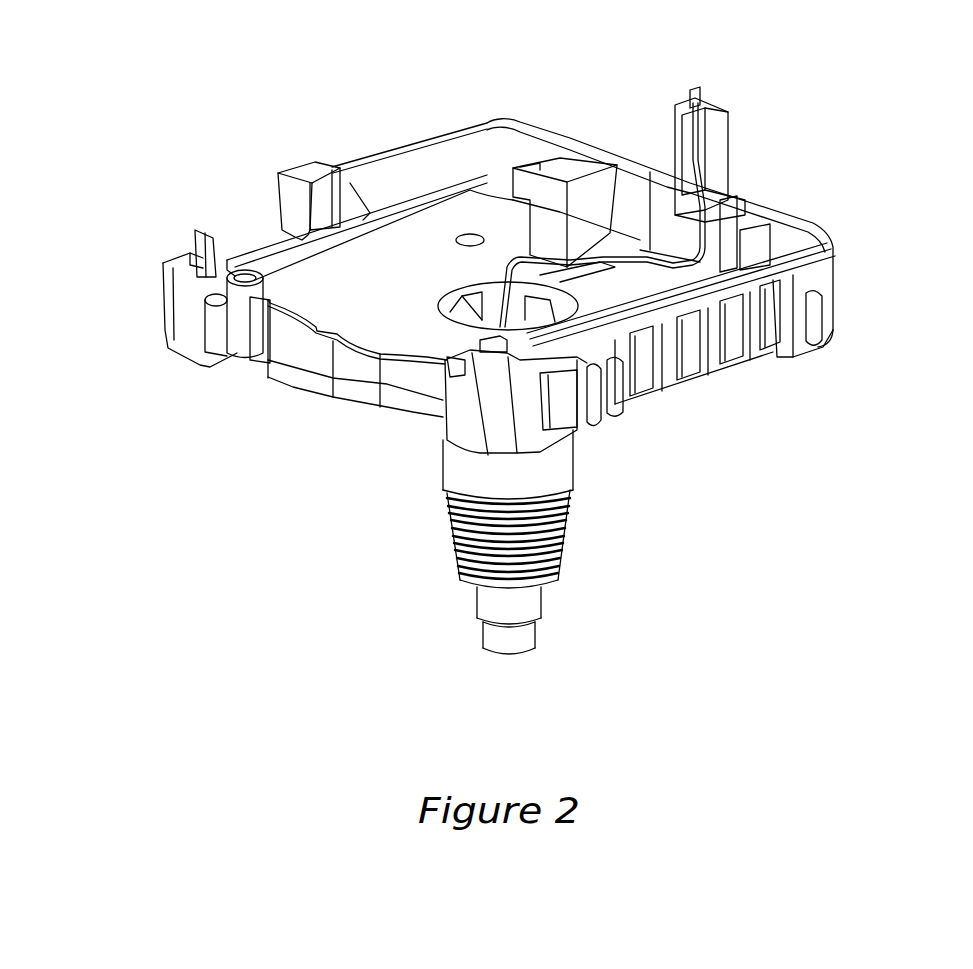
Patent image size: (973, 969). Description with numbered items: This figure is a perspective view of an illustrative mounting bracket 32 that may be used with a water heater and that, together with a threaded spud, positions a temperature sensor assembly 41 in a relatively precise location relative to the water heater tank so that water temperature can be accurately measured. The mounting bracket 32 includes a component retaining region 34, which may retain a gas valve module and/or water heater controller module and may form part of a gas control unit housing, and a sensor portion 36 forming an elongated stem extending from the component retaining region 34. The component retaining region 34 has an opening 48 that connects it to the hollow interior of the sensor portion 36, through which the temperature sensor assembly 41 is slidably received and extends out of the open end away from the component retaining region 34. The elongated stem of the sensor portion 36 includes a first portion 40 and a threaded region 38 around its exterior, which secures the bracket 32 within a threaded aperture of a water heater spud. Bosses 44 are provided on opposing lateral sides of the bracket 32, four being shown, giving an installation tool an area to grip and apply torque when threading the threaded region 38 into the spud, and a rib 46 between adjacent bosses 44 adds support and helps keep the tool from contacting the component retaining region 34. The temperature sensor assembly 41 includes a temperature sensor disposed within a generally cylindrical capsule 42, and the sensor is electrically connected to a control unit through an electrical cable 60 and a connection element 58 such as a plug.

The mounting bracket 32 is at (850, 114).
The component retaining region 34 is at (303, 290).
The sensor portion 36 is at (428, 523).
The threaded region 38 is at (563, 530).
The first portion 40 is at (443, 460).
The temperature sensor assembly 41 is at (556, 598).
The capsule 42 is at (530, 633).
The bosses 44 is at (297, 170).
The rib 46 is at (693, 378).
The opening 48 is at (483, 292).
The connection element 58 is at (727, 167).
The electrical cable 60 is at (515, 268).